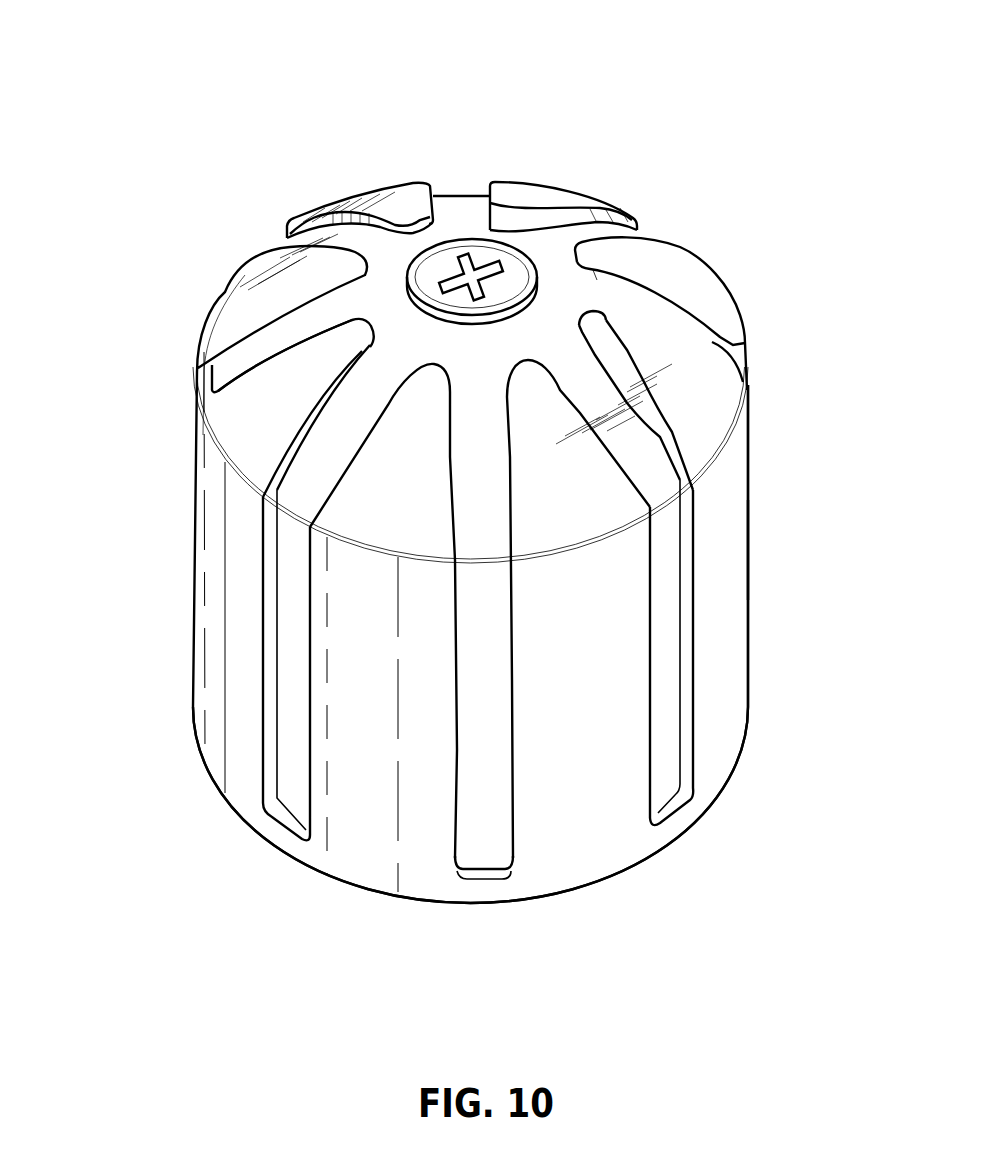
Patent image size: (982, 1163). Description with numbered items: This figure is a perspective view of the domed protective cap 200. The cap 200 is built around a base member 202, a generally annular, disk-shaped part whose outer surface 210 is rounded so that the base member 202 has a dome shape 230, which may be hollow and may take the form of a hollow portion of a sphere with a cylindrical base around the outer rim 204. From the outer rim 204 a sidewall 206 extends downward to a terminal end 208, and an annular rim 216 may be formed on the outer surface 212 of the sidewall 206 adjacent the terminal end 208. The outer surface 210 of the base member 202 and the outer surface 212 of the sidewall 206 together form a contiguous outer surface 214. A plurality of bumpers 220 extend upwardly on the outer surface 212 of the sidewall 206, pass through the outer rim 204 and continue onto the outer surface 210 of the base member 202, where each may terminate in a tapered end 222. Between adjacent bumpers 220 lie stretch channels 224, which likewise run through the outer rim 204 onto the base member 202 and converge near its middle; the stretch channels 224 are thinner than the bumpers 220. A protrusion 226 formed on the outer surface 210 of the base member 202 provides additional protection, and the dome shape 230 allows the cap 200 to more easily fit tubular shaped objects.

The protective cap 200 is at (158, 62).
The base member 202 is at (460, 186).
The outer rim 204 is at (733, 428).
The sidewall 206 is at (761, 603).
The terminal end 208 is at (673, 847).
The outer surface of base member 210 is at (555, 240).
The outer surface of sidewall 212 is at (727, 535).
The contiguous outer surface 214 is at (220, 510).
The annular rim 216 is at (488, 890).
The bumpers 220 is at (225, 290).
The tapered end 222 is at (248, 356).
The stretch channels 224 is at (305, 217).
The protrusion 226 is at (488, 255).
The dome shape 230 is at (340, 440).